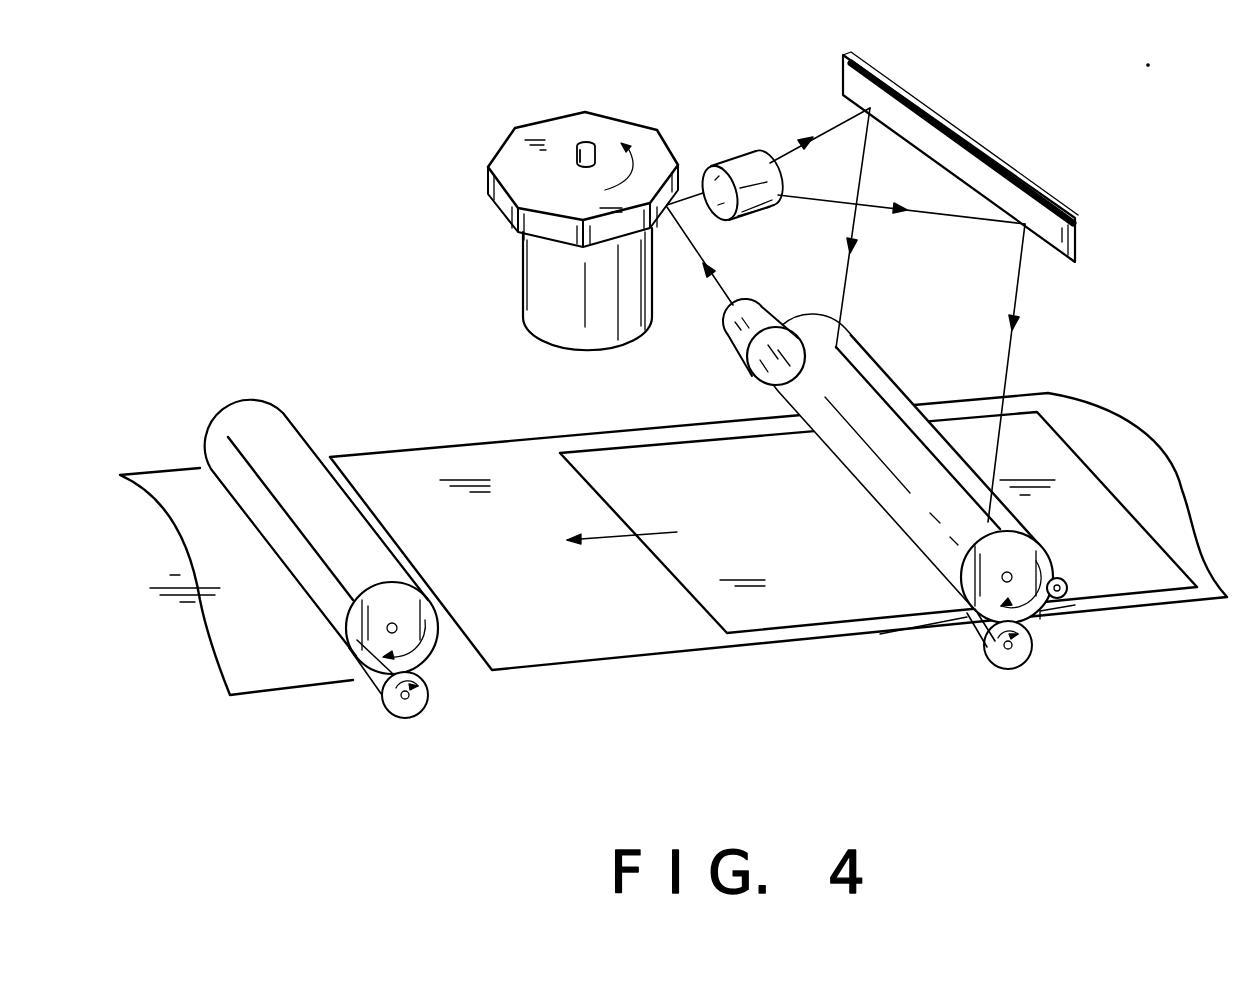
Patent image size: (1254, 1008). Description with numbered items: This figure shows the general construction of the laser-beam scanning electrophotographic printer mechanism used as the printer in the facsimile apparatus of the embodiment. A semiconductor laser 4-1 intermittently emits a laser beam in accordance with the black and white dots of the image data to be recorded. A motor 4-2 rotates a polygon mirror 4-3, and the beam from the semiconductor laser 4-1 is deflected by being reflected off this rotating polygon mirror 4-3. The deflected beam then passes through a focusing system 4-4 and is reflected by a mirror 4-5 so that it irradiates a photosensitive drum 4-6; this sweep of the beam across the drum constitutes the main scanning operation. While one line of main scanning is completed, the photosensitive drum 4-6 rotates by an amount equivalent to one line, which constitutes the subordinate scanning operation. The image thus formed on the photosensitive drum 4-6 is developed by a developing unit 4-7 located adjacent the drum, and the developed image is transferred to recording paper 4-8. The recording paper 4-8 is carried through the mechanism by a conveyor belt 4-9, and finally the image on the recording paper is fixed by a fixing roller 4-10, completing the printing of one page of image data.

The light source 4-1 is at (730, 335).
The motor 4-2 is at (533, 288).
The rotary polygon head 4-3 is at (605, 125).
The lens 4-4 is at (743, 167).
The mirror 4-5 is at (1005, 167).
The drum 4-6 is at (853, 465).
The pressure roller 4-7 is at (1058, 590).
The image area 4-8 is at (822, 615).
The recording sheet 4-9 is at (583, 648).
The feed roller 4-10 is at (250, 405).